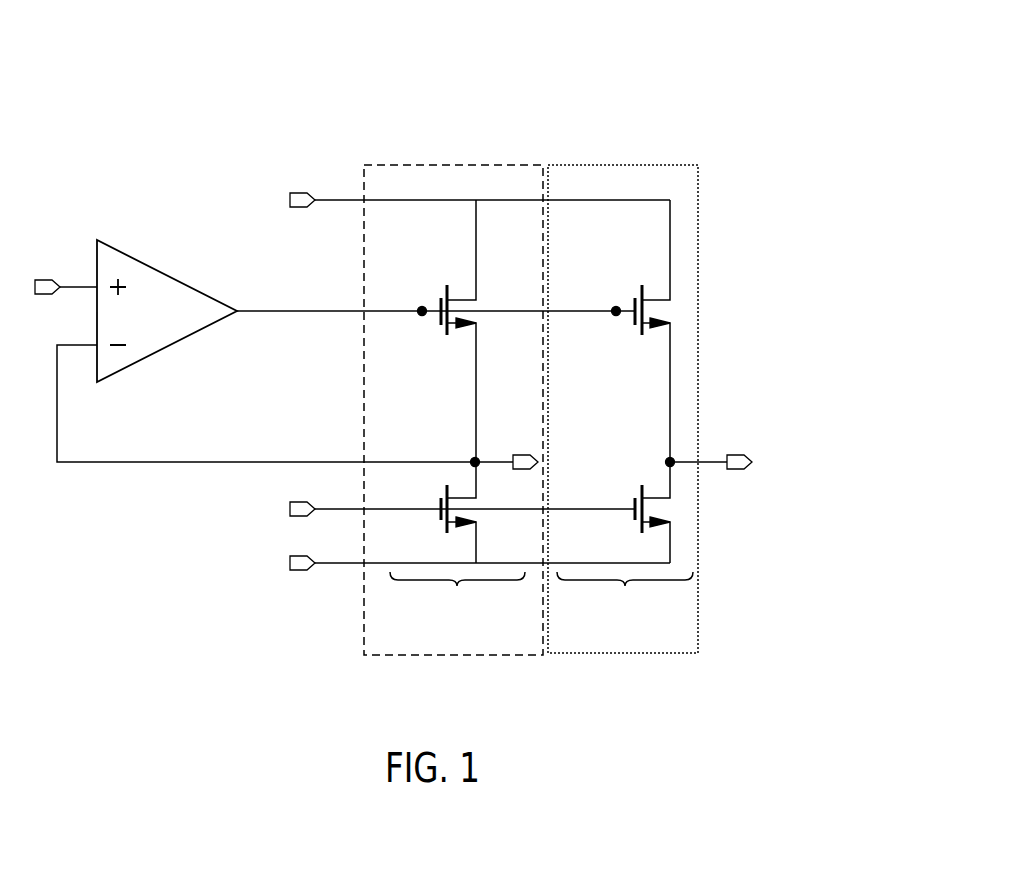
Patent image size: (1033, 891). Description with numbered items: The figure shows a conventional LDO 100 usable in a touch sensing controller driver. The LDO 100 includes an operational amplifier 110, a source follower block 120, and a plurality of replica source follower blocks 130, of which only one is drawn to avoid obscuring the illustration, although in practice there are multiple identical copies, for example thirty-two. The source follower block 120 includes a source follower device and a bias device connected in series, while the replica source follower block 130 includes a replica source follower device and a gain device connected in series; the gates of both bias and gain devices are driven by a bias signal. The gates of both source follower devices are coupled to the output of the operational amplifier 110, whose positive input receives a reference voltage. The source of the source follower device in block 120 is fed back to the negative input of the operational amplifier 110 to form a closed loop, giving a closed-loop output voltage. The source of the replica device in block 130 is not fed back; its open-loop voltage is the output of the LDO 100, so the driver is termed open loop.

The LDO 100 is at (638, 64).
The operational amplifier 110 is at (163, 273).
The source follower block 120 is at (400, 162).
The replica source follower block 130 is at (585, 163).